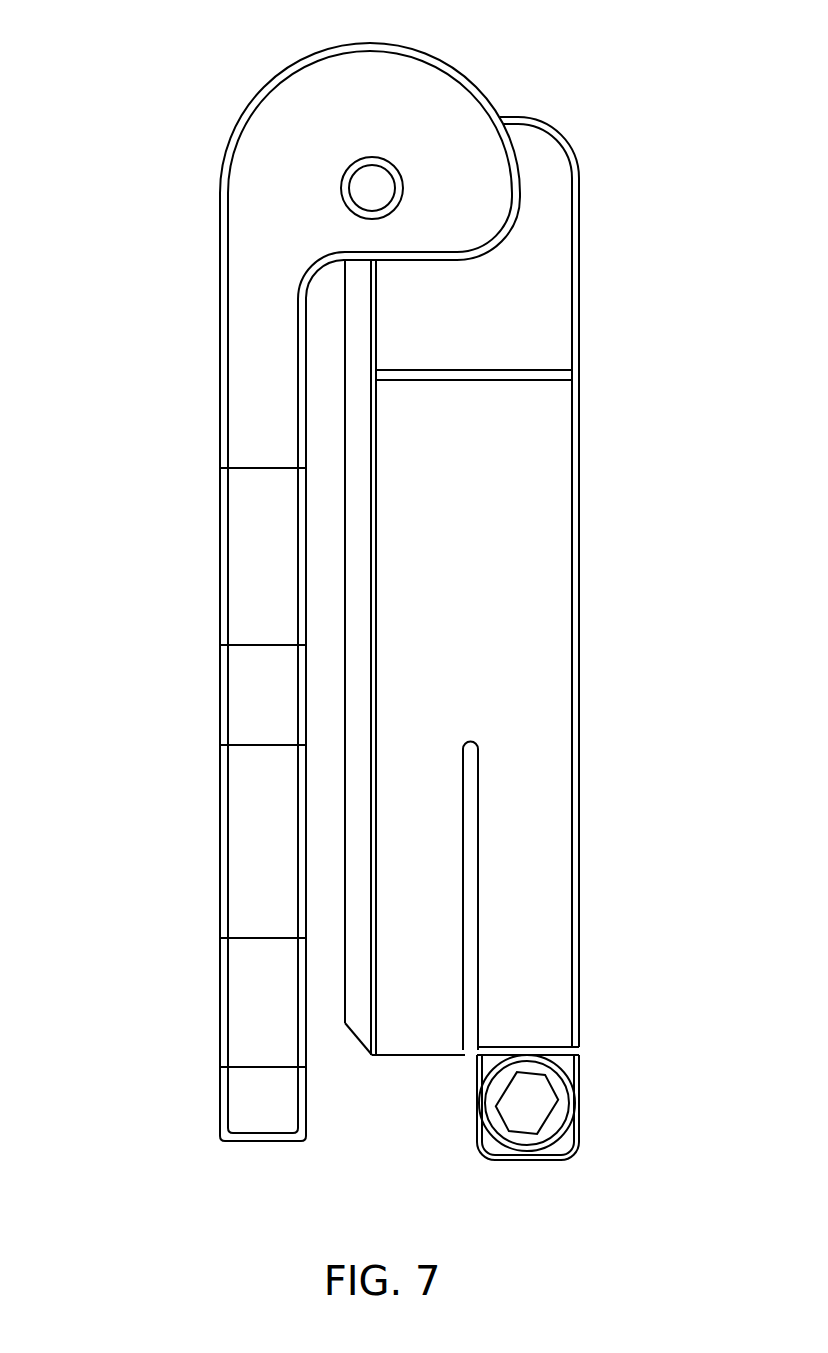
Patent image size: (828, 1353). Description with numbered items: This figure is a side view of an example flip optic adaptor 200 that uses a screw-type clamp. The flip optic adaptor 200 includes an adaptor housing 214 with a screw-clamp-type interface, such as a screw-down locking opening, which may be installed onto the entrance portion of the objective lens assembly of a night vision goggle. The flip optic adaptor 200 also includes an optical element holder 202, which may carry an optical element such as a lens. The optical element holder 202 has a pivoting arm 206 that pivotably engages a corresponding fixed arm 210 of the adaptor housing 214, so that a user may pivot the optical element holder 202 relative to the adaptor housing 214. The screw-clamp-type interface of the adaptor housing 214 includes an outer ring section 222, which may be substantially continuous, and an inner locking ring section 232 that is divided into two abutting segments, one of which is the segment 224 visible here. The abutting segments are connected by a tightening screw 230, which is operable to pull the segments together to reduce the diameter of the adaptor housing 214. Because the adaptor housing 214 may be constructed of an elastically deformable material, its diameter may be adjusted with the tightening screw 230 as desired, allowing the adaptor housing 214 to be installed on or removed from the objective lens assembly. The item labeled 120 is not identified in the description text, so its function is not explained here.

The flip optic adaptor 200 is at (127, 82).
The pivoting arm 206 is at (258, 258).
The optical element holder 202 is at (255, 848).
The end portion of bracket arm 120 is at (245, 1100).
The fixed arm 210 is at (535, 278).
The adaptor housing 214 is at (547, 620).
The inner locking ring section 232 is at (610, 839).
The segment 224 is at (535, 1000).
The outer ring section 222 is at (420, 1028).
The tightening screw 230 is at (535, 1110).